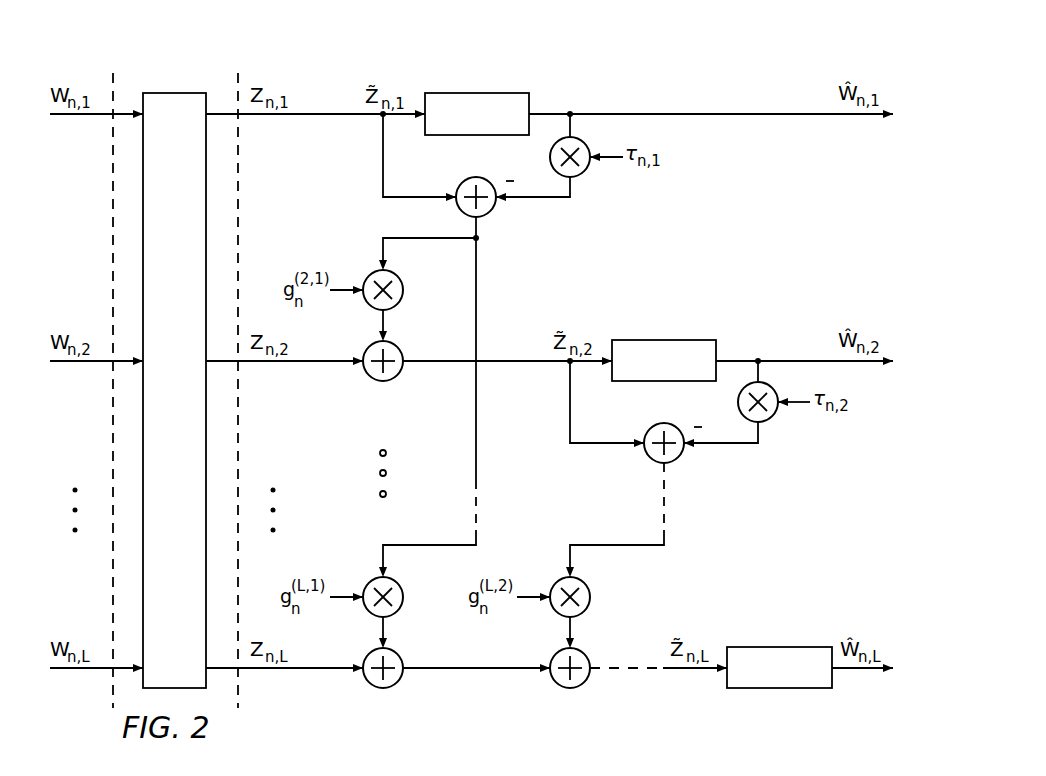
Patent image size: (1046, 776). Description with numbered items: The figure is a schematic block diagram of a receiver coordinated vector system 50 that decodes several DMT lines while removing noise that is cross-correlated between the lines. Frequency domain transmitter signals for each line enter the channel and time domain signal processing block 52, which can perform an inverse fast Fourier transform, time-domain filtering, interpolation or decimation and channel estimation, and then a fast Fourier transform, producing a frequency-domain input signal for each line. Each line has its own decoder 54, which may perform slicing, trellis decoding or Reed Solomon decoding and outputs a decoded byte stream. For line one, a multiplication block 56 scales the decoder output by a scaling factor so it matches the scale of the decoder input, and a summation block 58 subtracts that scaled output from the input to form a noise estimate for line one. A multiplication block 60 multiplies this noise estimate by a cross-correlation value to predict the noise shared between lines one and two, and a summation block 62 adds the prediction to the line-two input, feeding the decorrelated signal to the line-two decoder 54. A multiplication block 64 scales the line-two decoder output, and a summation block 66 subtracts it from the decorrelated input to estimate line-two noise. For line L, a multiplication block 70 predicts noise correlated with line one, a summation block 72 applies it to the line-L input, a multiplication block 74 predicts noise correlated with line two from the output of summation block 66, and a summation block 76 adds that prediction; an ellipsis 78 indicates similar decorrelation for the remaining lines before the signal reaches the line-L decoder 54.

The receiver coordinated vector system 50 is at (724, 89).
The channel and time domain signal processing block 52 is at (186, 432).
The decoder 54 is at (490, 93).
The multiplication block 56 is at (584, 172).
The summation block 58 is at (490, 213).
The multiplication block 60 is at (369, 305).
The summation block 62 is at (369, 377).
The multiplication block 64 is at (773, 417).
The summation block 66 is at (679, 459).
The multiplication block 70 is at (369, 612).
The summation block 72 is at (369, 684).
The multiplication block 74 is at (585, 612).
The summation block 76 is at (585, 684).
The ellipsis 78 is at (720, 596).